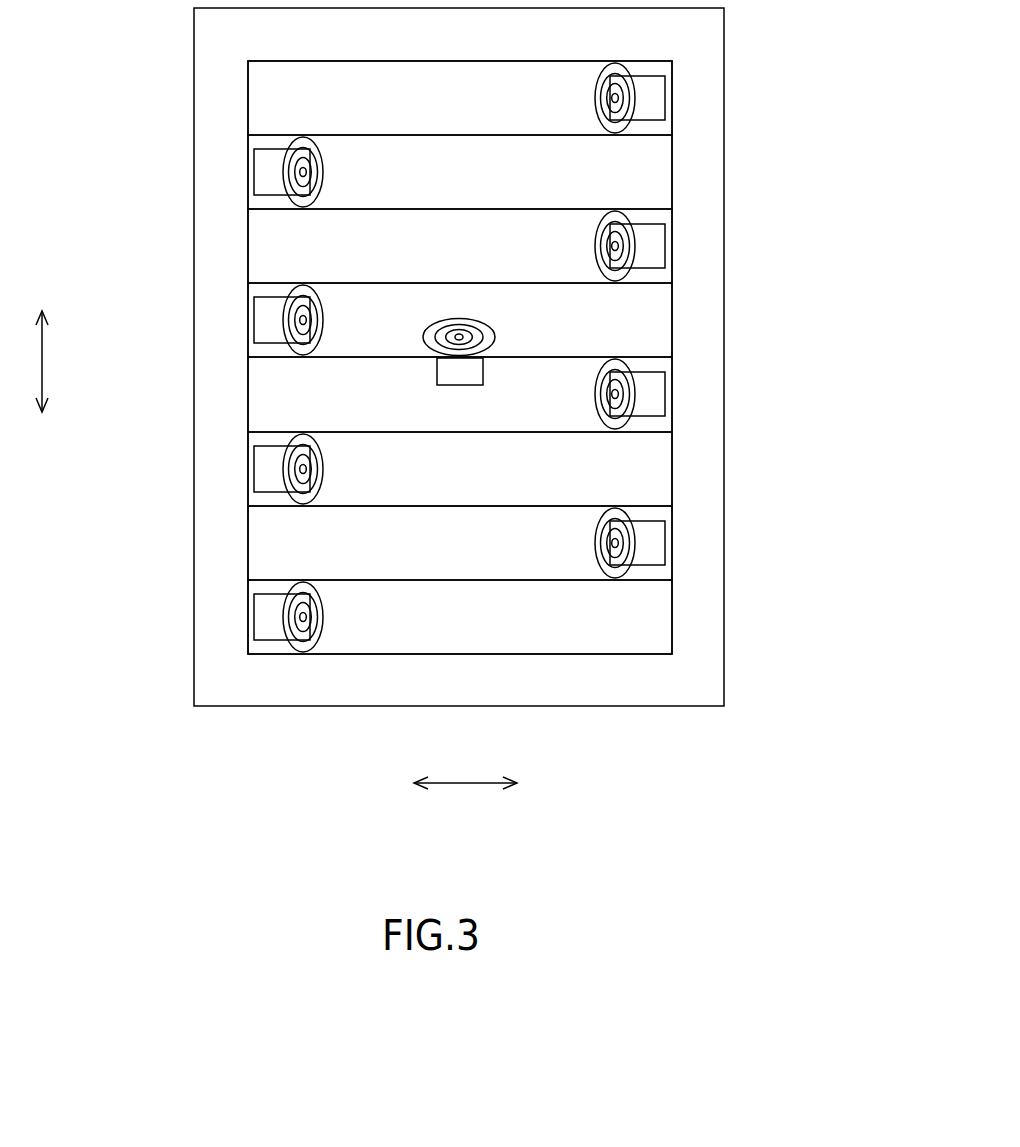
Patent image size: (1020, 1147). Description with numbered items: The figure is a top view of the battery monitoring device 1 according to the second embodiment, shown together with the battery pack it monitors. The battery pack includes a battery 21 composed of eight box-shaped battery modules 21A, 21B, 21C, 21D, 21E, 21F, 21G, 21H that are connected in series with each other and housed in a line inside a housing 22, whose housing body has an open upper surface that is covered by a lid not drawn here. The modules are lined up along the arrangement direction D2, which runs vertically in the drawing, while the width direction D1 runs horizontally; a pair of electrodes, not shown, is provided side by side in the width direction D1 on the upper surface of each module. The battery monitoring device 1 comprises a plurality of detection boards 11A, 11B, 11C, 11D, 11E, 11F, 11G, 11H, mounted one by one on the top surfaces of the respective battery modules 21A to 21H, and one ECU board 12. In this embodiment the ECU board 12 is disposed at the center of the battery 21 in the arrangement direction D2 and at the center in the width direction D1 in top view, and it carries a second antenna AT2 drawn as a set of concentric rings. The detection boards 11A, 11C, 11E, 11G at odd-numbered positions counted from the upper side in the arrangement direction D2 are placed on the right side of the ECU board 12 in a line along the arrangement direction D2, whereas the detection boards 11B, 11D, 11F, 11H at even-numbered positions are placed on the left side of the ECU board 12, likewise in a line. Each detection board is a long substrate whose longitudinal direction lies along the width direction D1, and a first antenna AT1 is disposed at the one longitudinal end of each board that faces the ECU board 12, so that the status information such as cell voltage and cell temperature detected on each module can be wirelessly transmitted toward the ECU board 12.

The battery monitoring device 1 is at (620, 803).
The detection board 11A is at (657, 83).
The detection board 11B is at (252, 156).
The detection board 11C is at (657, 231).
The detection board 11D is at (252, 304).
The detection board 11E is at (657, 379).
The detection board 11F is at (252, 453).
The detection board 11G is at (657, 528).
The detection board 11H is at (252, 601).
The ECU board 12 is at (457, 378).
The first antenna AT1 is at (616, 98).
The antenna of control unit AT2 is at (459, 332).
The battery 21 is at (602, 657).
The battery module 21A is at (657, 131).
The battery module 21B is at (255, 208).
The battery module 21C is at (657, 279).
The battery module 21D is at (255, 356).
The battery module 21E is at (657, 427).
The battery module 21F is at (255, 505).
The battery module 21G is at (657, 576).
The battery module 21H is at (255, 653).
The housing 22 is at (712, 326).
The width direction D1 is at (466, 786).
The arrangement direction D2 is at (42, 360).